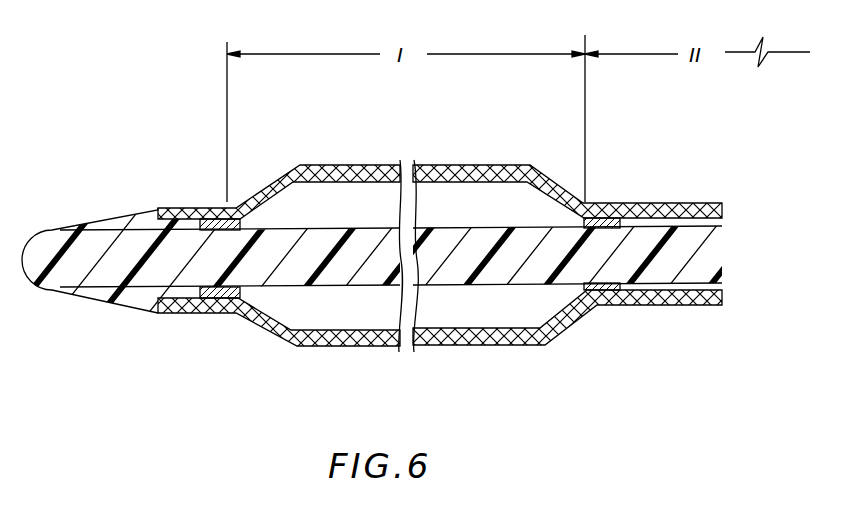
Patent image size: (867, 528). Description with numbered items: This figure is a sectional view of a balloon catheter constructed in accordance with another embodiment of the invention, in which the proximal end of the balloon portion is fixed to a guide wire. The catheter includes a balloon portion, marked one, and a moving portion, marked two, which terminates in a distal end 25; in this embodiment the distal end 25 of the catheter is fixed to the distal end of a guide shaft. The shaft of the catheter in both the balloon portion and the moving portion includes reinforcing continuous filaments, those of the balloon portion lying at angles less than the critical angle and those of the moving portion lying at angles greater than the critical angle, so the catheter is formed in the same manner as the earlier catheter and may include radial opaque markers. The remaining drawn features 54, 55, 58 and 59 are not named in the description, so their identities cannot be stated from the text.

The distal end 25 is at (193, 208).
The braided outer sleeve 54 is at (497, 165).
The inner core member 55 is at (652, 272).
The left junction ring 58 is at (221, 298).
The right junction ring 59 is at (607, 308).